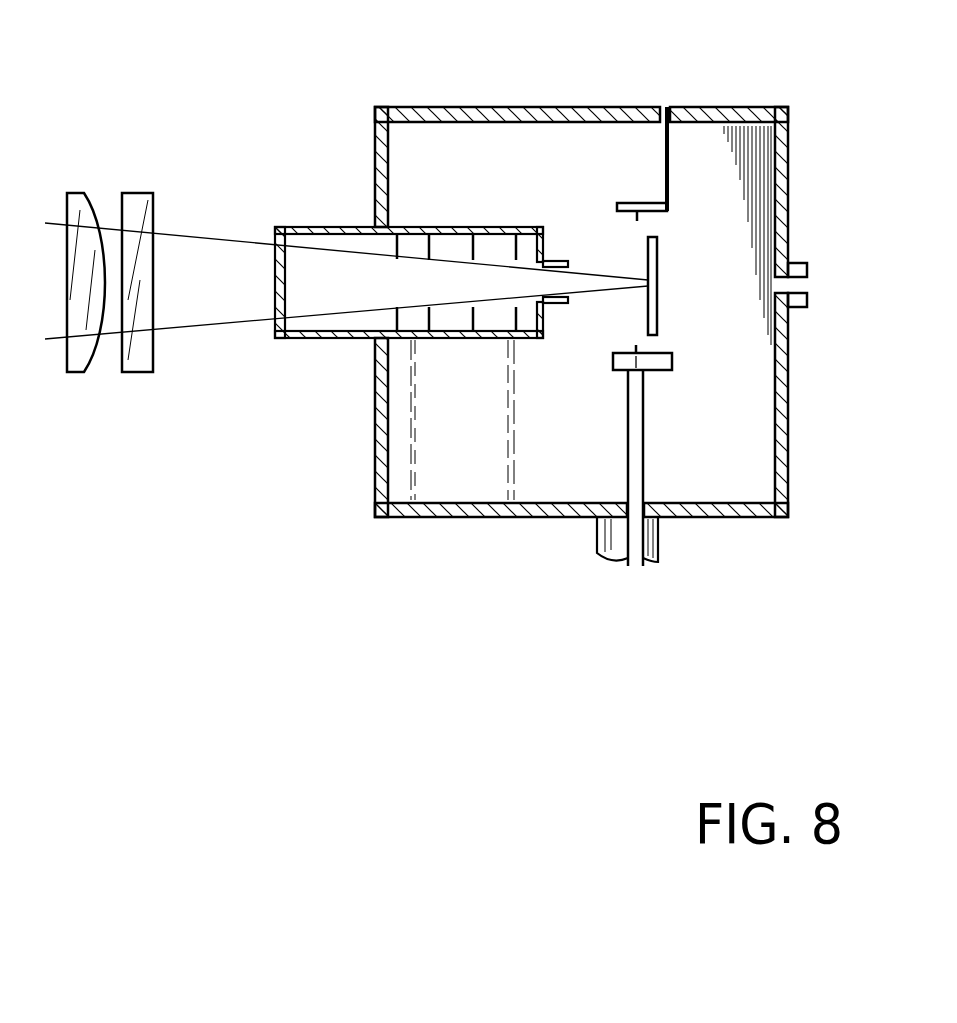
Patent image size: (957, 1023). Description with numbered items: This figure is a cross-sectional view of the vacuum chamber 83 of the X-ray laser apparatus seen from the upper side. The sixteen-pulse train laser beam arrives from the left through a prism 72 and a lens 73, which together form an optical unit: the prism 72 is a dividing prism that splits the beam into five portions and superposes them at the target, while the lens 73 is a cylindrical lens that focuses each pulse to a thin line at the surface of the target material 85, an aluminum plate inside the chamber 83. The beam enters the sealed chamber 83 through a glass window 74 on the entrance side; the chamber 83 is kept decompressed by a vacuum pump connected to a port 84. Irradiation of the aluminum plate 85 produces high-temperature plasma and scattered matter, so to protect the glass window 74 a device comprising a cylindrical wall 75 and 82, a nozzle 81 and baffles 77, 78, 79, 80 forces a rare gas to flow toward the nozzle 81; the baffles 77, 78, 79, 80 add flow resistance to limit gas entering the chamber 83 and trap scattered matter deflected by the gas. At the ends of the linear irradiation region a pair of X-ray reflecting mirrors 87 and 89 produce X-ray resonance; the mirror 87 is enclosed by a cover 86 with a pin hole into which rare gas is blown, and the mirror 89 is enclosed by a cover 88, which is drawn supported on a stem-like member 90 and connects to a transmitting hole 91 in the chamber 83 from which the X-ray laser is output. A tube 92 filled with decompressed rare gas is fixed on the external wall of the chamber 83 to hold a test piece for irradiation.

The prism 72 is at (72, 192).
The lens 73 is at (135, 192).
The glass window 74 is at (275, 272).
The cylindrical wall 75 is at (313, 228).
The baffle 77 is at (398, 232).
The baffle 78 is at (432, 232).
The baffle 79 is at (484, 232).
The baffle 80 is at (523, 232).
The nozzle 81 is at (553, 258).
The cylindrical wall 82 is at (452, 340).
The vacuum chamber 83 is at (462, 107).
The port 84 is at (790, 283).
The target material 85 is at (657, 257).
The cover 86 is at (622, 200).
The X-ray reflecting mirror 87 is at (640, 200).
The cover 88 is at (665, 355).
The X-ray reflecting mirror 89 is at (645, 378).
The support rod 90 is at (645, 438).
The transmitting hole 91 is at (632, 530).
The tube 92 is at (594, 538).